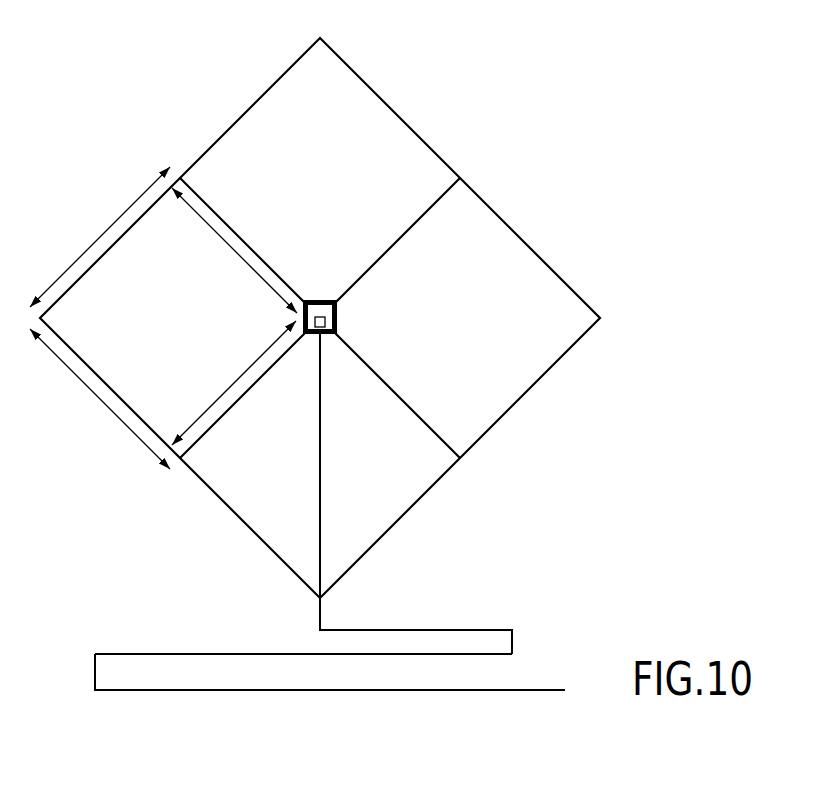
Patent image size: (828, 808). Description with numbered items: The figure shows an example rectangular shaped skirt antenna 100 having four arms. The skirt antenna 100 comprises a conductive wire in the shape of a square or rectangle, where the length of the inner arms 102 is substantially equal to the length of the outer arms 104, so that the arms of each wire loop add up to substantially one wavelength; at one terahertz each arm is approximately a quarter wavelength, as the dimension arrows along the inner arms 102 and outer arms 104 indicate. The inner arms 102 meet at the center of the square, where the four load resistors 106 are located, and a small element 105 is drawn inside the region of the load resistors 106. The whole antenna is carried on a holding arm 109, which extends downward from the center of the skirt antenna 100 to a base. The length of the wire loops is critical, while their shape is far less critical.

The skirt antenna 100 is at (354, 364).
The inner arms 102 is at (425, 216).
The outer arms 104 is at (383, 100).
The feed point 105 is at (326, 322).
The load resistors 106 is at (322, 300).
The holding arm 109 is at (322, 405).